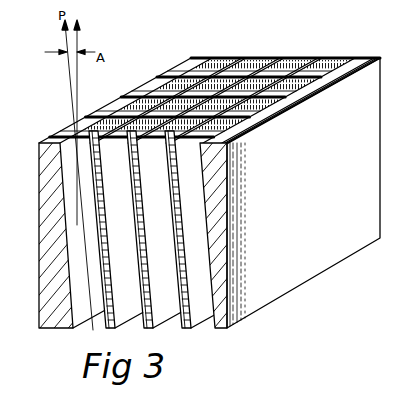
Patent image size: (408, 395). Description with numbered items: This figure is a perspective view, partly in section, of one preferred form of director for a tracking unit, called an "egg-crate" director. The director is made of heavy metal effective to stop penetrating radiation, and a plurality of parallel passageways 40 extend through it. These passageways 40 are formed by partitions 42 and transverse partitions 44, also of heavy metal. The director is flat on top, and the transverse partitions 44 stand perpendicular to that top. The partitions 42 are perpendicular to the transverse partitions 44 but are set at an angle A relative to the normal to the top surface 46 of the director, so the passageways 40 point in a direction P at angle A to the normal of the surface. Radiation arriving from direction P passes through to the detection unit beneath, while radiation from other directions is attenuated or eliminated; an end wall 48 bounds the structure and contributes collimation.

The passageways 40 is at (276, 72).
The partitions 42 is at (292, 70).
The transverse partitions 44 is at (164, 83).
The top surface 46 is at (178, 67).
The end wall 48 is at (284, 62).